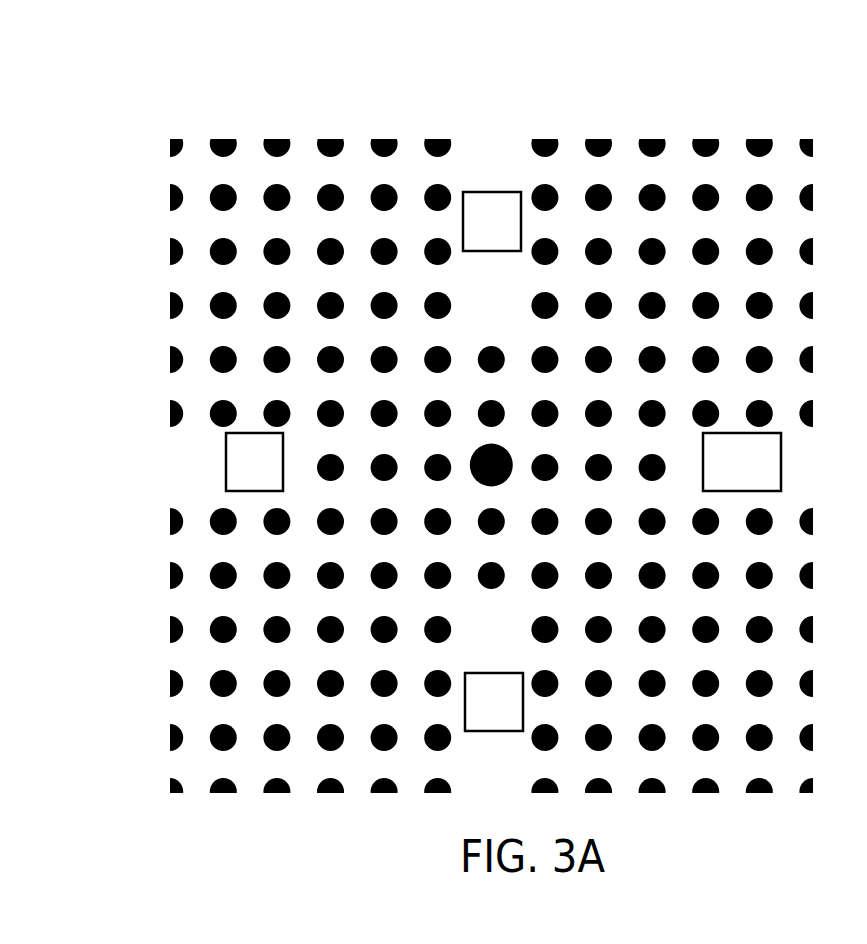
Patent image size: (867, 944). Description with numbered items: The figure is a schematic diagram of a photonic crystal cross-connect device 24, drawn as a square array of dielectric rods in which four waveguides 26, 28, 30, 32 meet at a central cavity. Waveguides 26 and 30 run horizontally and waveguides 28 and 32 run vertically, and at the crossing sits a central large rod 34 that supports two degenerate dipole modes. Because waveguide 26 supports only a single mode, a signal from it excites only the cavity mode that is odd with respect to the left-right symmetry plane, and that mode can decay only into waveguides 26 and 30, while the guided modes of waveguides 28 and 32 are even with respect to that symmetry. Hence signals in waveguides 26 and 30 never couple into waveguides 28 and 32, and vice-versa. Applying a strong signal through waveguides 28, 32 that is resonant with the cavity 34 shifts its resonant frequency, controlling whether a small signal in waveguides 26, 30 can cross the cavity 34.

The device 24 is at (203, 804).
The waveguide 26 is at (254, 462).
The waveguide 28 is at (492, 221).
The waveguide 30 is at (742, 462).
The waveguide 32 is at (494, 702).
The central large rod 34 is at (466, 429).